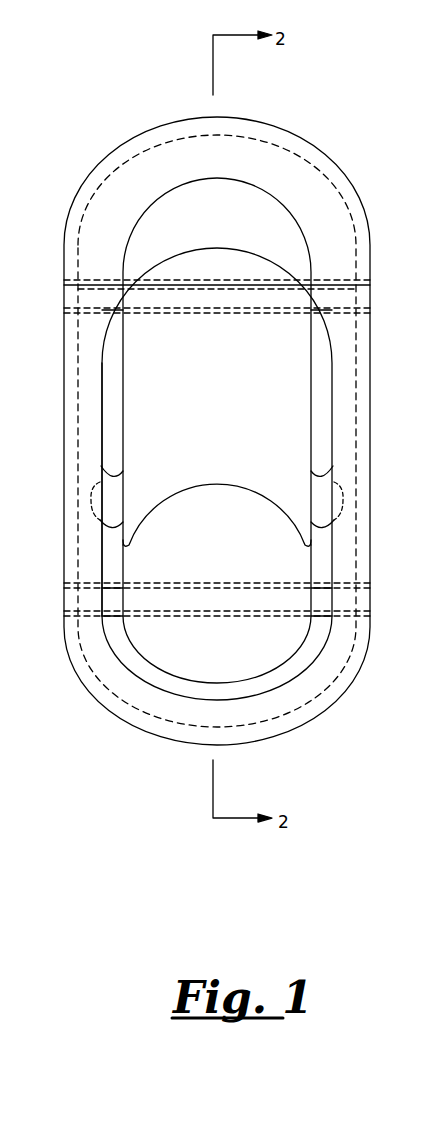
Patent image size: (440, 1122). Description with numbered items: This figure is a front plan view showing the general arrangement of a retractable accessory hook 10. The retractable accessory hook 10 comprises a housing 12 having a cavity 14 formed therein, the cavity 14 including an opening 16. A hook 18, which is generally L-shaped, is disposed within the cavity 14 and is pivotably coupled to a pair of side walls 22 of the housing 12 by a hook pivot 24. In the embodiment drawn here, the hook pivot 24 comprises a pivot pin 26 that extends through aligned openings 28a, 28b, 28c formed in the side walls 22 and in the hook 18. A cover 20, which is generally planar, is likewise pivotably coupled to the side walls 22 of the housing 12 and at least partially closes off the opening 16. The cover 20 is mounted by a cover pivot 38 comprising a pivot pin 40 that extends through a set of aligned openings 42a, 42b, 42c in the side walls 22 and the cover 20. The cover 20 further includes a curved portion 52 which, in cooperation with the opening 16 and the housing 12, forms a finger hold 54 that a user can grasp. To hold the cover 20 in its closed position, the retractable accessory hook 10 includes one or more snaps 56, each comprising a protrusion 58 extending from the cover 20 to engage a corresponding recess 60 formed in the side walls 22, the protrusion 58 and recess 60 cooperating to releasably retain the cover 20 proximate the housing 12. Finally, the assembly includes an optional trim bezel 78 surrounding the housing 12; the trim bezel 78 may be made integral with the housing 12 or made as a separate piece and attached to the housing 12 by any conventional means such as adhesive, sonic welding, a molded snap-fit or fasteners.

The retractable accessory hook 10 is at (130, 75).
The housing 12 is at (320, 169).
The cavity 14 is at (318, 388).
The opening 16 is at (112, 434).
The hook 18 is at (250, 652).
The cover 20 is at (142, 336).
The side walls 22 is at (78, 376).
The hook pivot 24 is at (53, 600).
The pivot pin 26 is at (340, 603).
The opening 28a is at (60, 615).
The opening 28b is at (180, 582).
The opening 28c is at (372, 585).
The cover pivot 38 is at (378, 287).
The pivot pin 40 is at (64, 296).
The opening 42a is at (64, 280).
The opening 42b is at (207, 315).
The opening 42c is at (372, 312).
The curved portion 52 is at (219, 487).
The finger hold 54 is at (178, 652).
The snap 56 is at (85, 490).
The protrusion 58 is at (101, 466).
The recess 60 is at (92, 520).
The trim bezel 78 is at (150, 734).